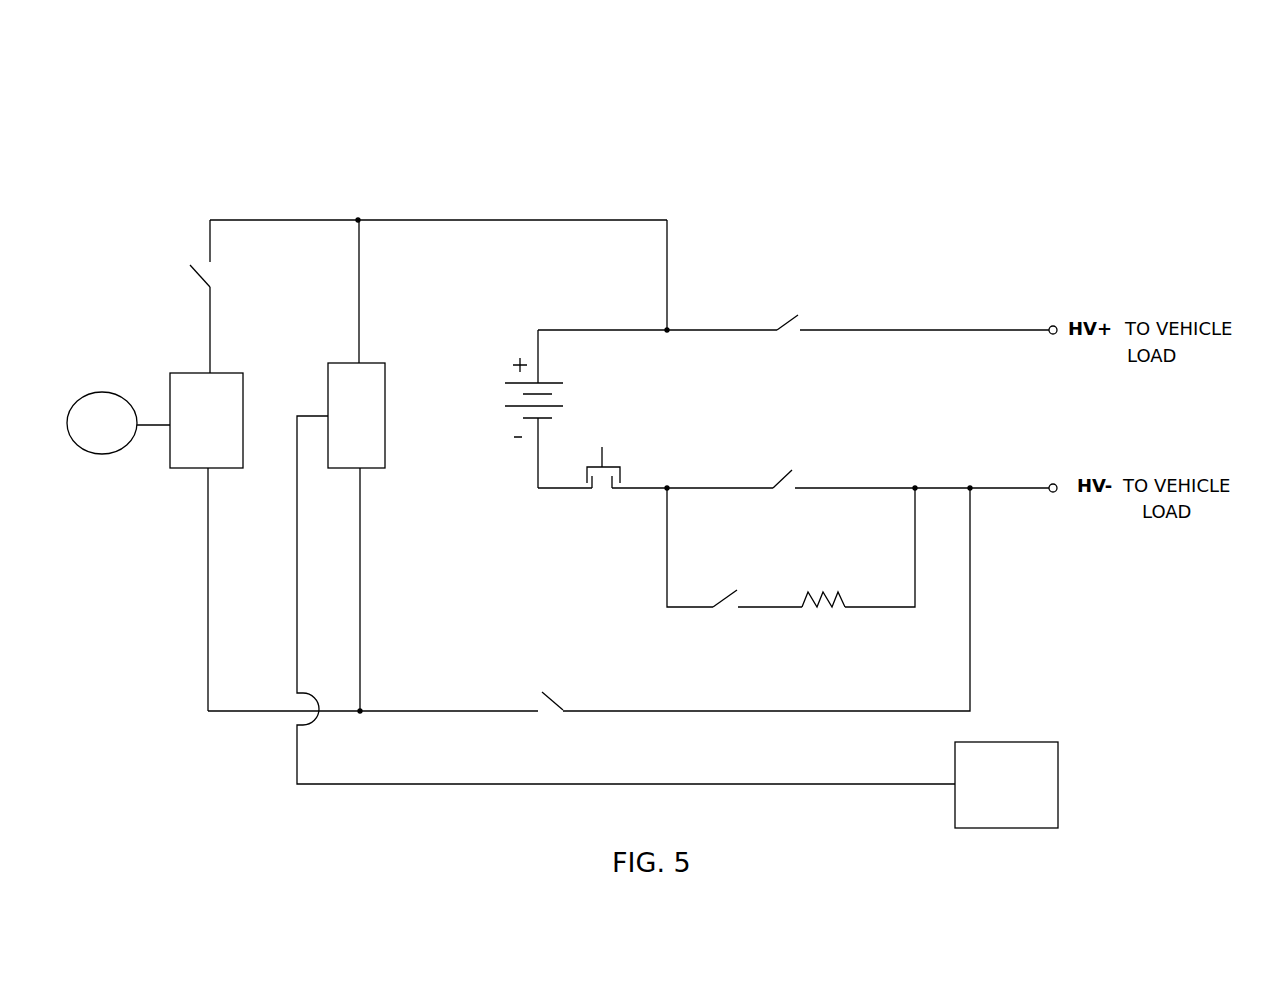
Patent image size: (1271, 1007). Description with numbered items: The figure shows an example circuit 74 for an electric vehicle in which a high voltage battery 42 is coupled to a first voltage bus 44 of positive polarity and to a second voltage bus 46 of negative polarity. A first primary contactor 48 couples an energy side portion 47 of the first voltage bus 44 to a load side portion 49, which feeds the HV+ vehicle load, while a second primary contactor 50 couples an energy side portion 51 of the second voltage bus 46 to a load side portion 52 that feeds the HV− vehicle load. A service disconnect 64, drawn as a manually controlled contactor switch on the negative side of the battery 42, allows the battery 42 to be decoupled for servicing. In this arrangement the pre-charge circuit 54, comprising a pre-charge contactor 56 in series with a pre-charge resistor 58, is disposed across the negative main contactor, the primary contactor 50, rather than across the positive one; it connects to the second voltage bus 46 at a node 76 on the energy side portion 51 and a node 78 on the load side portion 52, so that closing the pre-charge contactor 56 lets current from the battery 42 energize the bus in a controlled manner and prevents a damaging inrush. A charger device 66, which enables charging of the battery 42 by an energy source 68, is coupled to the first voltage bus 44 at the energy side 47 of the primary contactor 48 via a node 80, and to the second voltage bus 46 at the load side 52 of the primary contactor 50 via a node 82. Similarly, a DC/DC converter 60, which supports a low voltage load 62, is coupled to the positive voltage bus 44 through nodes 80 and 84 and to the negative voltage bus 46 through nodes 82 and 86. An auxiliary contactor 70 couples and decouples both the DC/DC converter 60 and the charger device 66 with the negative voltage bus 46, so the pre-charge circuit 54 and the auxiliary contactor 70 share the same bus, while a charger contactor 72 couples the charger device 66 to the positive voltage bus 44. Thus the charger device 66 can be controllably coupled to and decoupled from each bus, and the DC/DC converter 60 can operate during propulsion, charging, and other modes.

The high voltage battery 42 is at (502, 368).
The first voltage bus 44 is at (595, 317).
The second voltage bus 46 is at (558, 492).
The first (energy side) portion of the first voltage bus 47 is at (697, 335).
The first primary contactor 48 is at (797, 308).
The second (load side) portion of the first voltage bus 49 is at (862, 333).
The second primary contactor 50 is at (803, 475).
The first (energy side) portion of the second voltage bus 51 is at (713, 493).
The second (load side) portion of the second voltage bus 52 is at (848, 492).
The pre-charge circuit 54 is at (791, 593).
The pre-charge contactor 56 is at (727, 612).
The pre-charge resistor 58 is at (828, 605).
The DC/DC converter 60 is at (356, 537).
The low voltage load 62 is at (677, 622).
The service disconnect 64 is at (619, 466).
The charger device 66 is at (206, 542).
The energy source 68 is at (118, 423).
The auxiliary contactor 70 is at (532, 692).
The charger contactor 72 is at (187, 272).
The example circuit 74 is at (688, 112).
The node 76 is at (665, 490).
The node 78 is at (915, 488).
The node 80 is at (667, 330).
The node 82 is at (970, 488).
The node 84 is at (358, 220).
The node 86 is at (360, 711).